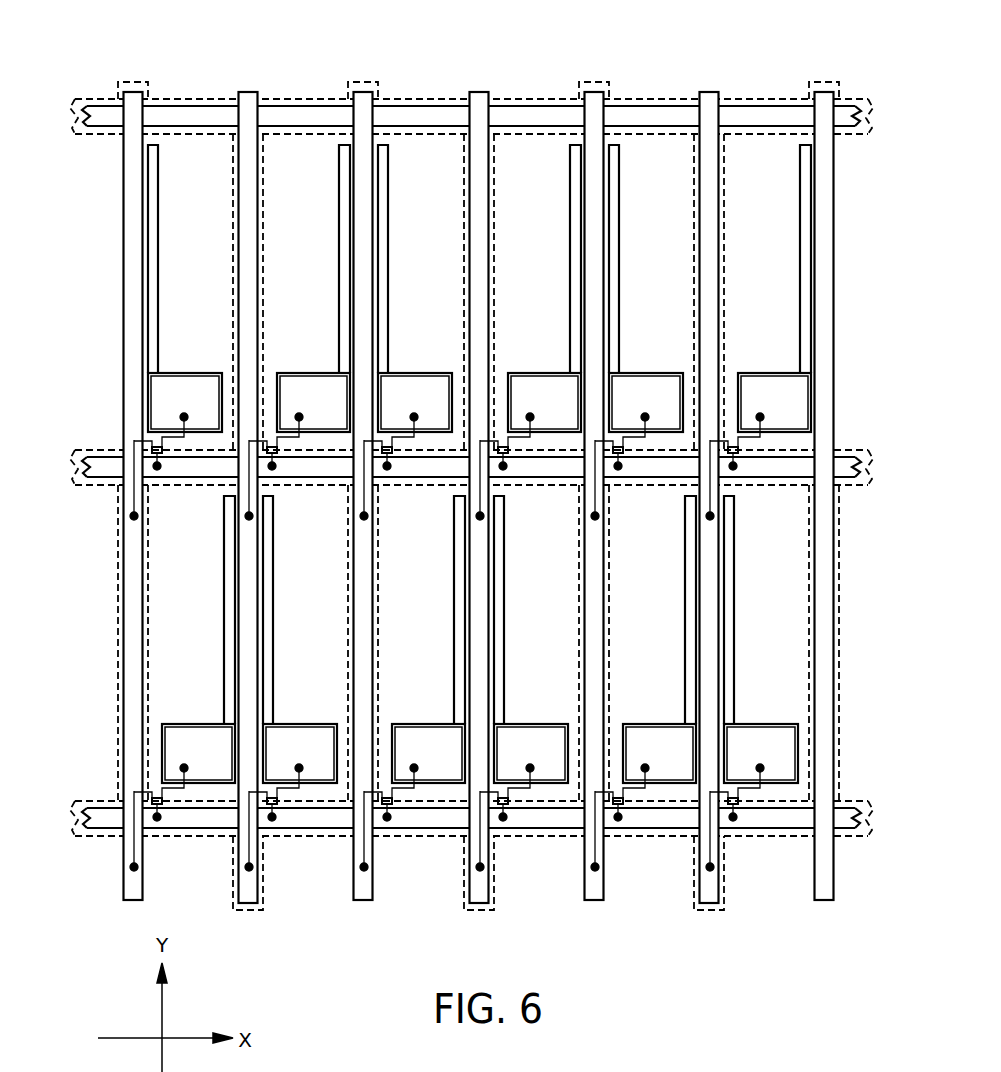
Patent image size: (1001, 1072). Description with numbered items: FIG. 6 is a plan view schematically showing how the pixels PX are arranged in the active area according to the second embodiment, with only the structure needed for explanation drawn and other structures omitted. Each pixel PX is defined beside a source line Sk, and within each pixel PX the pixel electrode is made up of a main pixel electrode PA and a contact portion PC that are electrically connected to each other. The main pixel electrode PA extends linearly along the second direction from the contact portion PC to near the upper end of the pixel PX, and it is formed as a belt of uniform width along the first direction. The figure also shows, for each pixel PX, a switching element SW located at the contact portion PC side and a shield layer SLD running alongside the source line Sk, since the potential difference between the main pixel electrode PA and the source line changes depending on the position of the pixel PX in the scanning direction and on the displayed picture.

The source line Sk is at (133, 92).
The pixel PX is at (479, 471).
The shield layer SLD is at (263, 194).
The main pixel electrode PA is at (158, 264).
The contact portion PC is at (185, 384).
The switching element SW is at (192, 443).